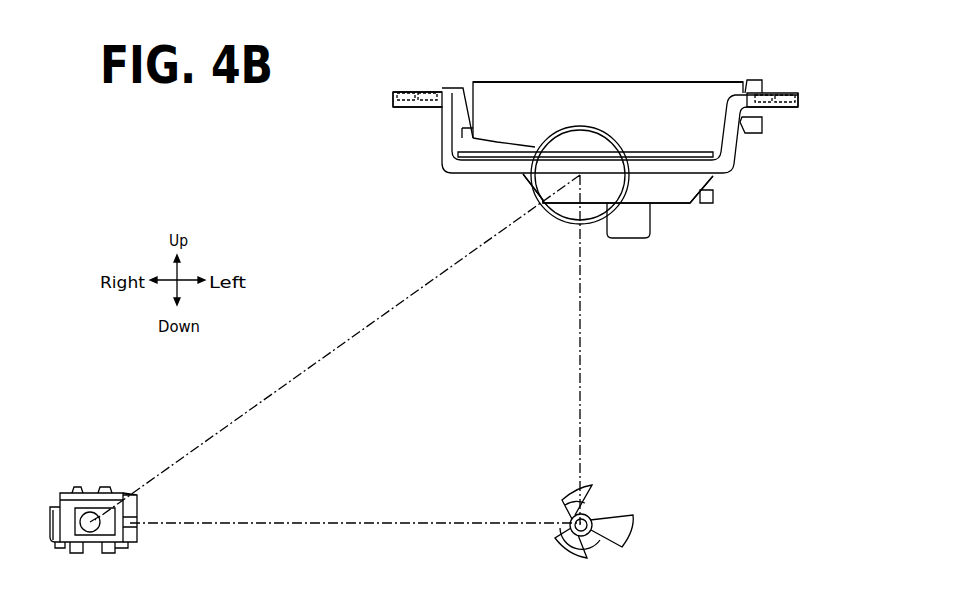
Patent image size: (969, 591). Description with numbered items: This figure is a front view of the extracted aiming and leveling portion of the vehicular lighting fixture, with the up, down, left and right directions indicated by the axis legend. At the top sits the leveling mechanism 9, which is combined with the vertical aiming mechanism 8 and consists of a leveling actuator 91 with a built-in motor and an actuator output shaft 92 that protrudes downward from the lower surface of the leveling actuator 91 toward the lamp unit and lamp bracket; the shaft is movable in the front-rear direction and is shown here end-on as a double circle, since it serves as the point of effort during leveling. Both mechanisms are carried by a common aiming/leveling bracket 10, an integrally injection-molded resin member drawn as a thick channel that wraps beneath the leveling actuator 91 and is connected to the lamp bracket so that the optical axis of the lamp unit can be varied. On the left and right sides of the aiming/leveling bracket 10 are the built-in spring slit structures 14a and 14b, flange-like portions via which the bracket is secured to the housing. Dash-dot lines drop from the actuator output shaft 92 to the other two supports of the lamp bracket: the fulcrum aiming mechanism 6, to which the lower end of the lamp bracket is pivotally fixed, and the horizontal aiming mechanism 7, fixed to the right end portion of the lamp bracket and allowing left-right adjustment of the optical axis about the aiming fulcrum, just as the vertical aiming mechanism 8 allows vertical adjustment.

The fulcrum aiming mechanism 6 is at (565, 493).
The horizontal aiming mechanism 7 is at (90, 492).
The vertical aiming mechanism 8 is at (512, 75).
The leveling mechanism 9 is at (603, 68).
The leveling actuator 91 is at (673, 80).
The actuator output shaft 92 is at (555, 225).
The aiming/leveling bracket 10 is at (452, 176).
The built-in spring slit structure 14a is at (405, 91).
The built-in spring slit structure 14b is at (777, 91).